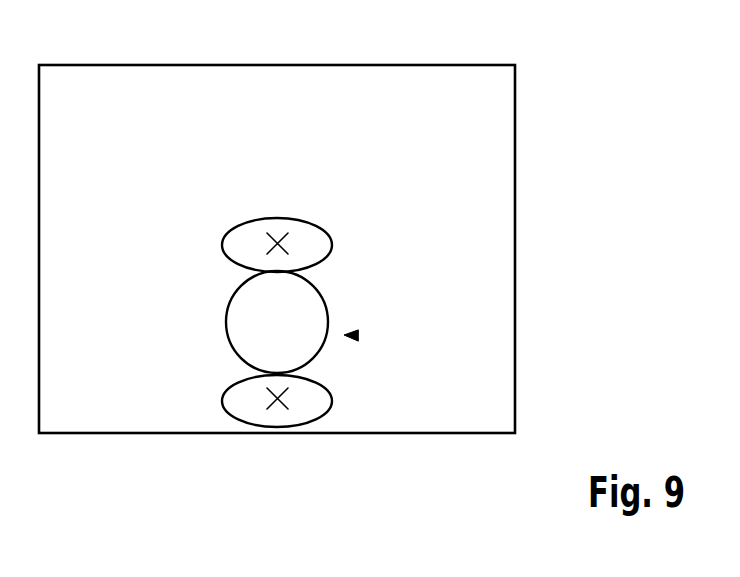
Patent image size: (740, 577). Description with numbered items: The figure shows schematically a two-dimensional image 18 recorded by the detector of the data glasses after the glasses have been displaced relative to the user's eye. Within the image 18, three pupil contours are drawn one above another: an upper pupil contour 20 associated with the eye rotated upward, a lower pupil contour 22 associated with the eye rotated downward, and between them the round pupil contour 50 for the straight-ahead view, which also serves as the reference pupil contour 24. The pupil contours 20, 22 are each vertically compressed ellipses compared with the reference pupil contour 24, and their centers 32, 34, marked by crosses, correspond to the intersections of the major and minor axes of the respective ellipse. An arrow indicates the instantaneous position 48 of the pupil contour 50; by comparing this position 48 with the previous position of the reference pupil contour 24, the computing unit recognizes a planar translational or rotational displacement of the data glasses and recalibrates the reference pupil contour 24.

The two-dimensional image 18 is at (135, 72).
The pupil contour 20 is at (327, 245).
The pupil contour 22 is at (330, 405).
The reference pupil contour 24 is at (328, 322).
The pupil contour 50 is at (329, 311).
The center 32 is at (223, 246).
The center 34 is at (223, 400).
The instantaneous position 48 is at (350, 336).